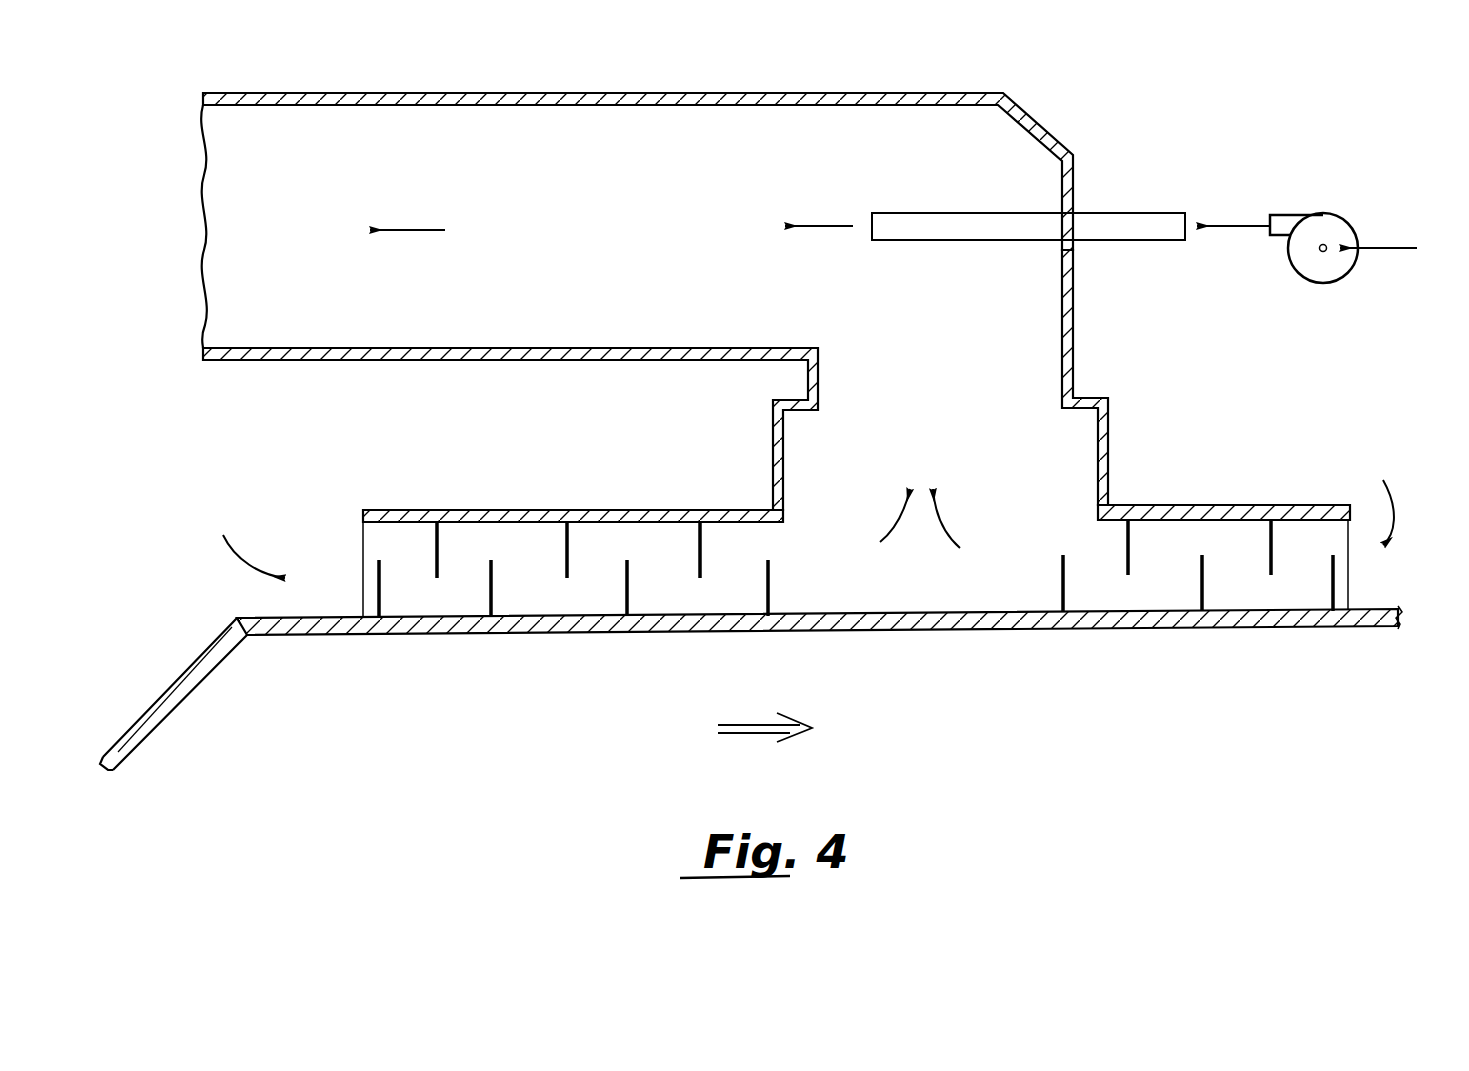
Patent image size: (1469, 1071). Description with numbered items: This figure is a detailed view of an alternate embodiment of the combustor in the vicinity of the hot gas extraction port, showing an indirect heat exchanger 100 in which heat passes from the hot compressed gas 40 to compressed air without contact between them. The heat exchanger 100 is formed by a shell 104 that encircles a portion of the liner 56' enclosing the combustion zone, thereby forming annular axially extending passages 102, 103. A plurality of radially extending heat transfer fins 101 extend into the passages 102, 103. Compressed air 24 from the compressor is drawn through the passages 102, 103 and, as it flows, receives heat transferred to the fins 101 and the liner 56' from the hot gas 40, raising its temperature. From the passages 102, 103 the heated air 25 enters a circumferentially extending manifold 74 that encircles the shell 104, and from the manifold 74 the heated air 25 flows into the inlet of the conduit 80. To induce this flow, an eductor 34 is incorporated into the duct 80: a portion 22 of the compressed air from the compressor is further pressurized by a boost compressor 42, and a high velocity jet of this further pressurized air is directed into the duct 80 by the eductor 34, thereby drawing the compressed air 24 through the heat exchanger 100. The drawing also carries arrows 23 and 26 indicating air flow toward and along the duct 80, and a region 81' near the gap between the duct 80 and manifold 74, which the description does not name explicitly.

The portion of the compressed air 22 is at (1400, 247).
The fan discharge flow 23 is at (1245, 222).
The compressed air 24 is at (238, 558).
The heated air 25 is at (940, 530).
The air flow in duct 26 is at (405, 230).
The eductor 34 is at (1105, 213).
The hot compressed gas 40 is at (762, 730).
The boost compressor 42 is at (1330, 220).
The liner 56' is at (751, 688).
The manifold 74 is at (1108, 425).
The conduit 80 is at (572, 352).
The duct wall opening 81' is at (637, 250).
The indirect heat exchanger 100 is at (1185, 503).
The heat transfer fins 101 is at (703, 560).
The annular axially extending passage 102 is at (550, 576).
The annular axially extending passage 103 is at (1187, 578).
The shell 104 is at (573, 510).